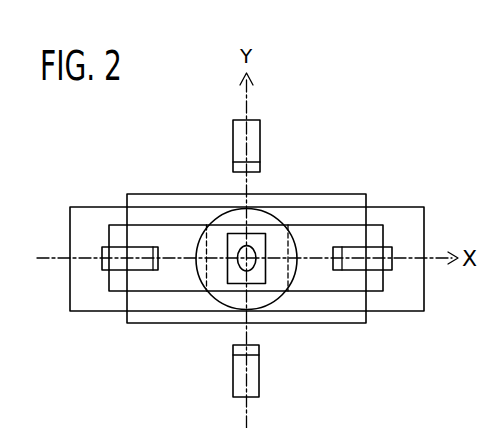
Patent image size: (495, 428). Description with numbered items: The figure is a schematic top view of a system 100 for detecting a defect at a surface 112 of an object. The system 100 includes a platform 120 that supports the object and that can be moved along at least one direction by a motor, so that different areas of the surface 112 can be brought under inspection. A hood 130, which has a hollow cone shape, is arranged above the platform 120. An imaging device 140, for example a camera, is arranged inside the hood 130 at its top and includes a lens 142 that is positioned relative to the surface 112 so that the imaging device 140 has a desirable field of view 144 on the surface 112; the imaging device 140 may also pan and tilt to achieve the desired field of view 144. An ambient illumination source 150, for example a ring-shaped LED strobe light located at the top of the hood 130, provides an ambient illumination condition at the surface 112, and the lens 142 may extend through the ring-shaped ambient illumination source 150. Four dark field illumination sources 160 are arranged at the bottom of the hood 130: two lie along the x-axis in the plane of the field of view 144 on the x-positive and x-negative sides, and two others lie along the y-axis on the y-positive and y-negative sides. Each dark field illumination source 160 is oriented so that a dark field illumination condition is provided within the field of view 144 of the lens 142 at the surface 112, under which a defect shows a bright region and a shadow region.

The system 100 is at (337, 103).
The surface 112 is at (347, 283).
The platform 120 is at (405, 293).
The hood 130 is at (340, 194).
The imaging device 140 is at (234, 231).
The lens 142 is at (241, 266).
The field of view 144 is at (290, 270).
The ambient illumination source 150 is at (278, 214).
The dark field illumination source 160 is at (118, 247).